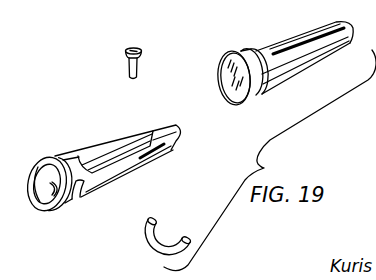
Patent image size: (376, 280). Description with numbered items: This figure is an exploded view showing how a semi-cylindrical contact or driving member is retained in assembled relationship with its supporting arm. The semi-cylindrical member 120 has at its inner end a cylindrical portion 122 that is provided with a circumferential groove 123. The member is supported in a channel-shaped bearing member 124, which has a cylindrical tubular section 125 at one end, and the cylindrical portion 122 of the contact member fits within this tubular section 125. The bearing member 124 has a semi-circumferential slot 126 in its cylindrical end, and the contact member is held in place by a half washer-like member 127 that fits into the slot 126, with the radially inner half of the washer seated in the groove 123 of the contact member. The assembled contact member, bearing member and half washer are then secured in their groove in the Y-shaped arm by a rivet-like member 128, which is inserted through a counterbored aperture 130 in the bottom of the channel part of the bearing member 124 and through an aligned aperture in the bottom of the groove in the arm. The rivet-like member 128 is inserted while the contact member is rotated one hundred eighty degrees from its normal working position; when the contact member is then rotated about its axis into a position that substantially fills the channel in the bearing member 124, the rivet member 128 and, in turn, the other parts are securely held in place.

The semi-cylindrical member 120 is at (315, 52).
The cylindrical portion 122 is at (224, 72).
The circumferential groove 123 is at (241, 55).
The channel-shaped bearing member 124 is at (149, 158).
The cylindrical tubular section 125 is at (53, 156).
The semi-circumferential slot 126 is at (73, 205).
The half washer-like member 127 is at (152, 245).
The rivet-like member 128 is at (124, 57).
The counterbored aperture 130 is at (142, 142).